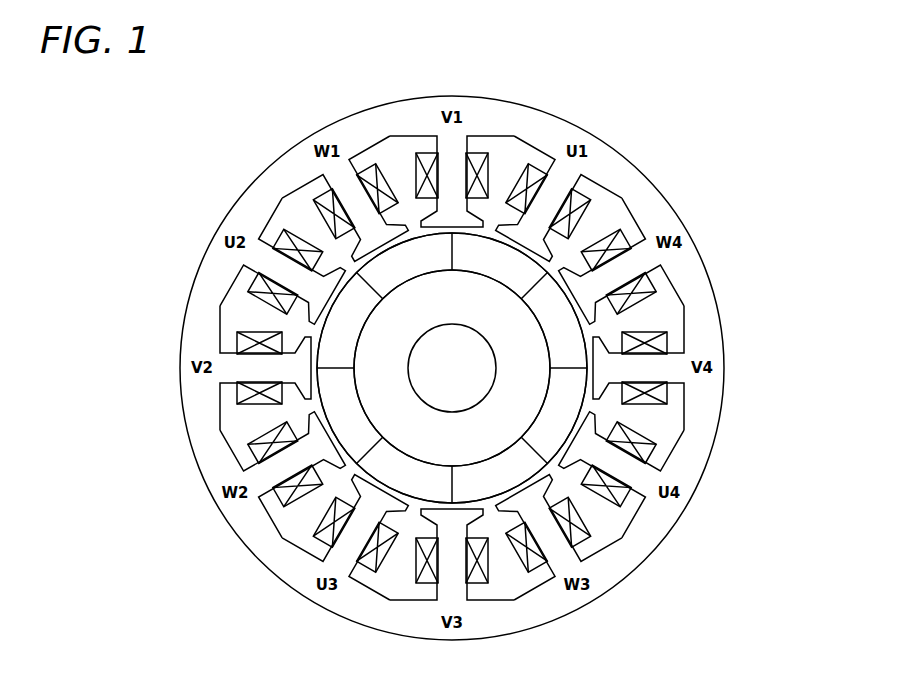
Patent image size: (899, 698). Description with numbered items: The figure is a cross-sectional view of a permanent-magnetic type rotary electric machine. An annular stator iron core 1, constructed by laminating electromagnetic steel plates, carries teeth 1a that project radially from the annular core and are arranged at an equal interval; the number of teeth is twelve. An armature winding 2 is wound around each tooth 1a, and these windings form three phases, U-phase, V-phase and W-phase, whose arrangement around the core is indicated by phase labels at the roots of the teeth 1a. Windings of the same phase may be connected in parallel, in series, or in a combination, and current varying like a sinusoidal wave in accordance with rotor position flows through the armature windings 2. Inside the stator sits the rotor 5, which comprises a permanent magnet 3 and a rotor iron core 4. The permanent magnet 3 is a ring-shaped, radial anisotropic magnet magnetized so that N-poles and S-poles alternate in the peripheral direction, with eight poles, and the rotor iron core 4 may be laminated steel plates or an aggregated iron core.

The stator iron core 1 is at (703, 337).
The teeth 1a is at (640, 378).
The armature winding 2 is at (645, 232).
The permanent magnet 3 is at (338, 400).
The rotor iron core 4 is at (435, 450).
The rotor 5 is at (398, 420).